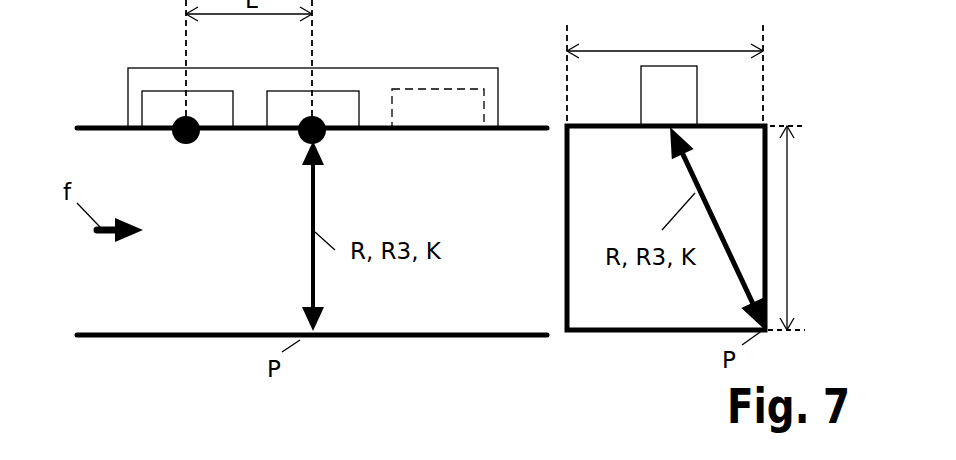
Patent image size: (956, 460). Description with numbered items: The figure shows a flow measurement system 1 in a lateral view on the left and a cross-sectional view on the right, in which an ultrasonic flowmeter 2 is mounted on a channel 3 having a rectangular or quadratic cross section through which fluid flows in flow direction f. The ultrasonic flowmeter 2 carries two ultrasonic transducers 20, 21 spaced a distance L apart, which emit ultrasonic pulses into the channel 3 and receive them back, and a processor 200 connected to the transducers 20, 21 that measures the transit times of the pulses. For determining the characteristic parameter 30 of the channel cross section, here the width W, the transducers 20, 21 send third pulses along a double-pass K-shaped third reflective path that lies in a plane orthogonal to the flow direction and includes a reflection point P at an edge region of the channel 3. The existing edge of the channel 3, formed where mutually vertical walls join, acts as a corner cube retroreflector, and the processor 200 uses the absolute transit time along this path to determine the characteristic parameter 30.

The flow measurement system 1 is at (82, 43).
The ultrasonic flowmeter 2 is at (127, 98).
The channel 3 is at (122, 337).
The ultrasonic transducer 20 is at (155, 90).
The ultrasonic transducer 21 is at (295, 90).
The processor 200 is at (437, 88).
The characteristic parameter 30 is at (696, 176).